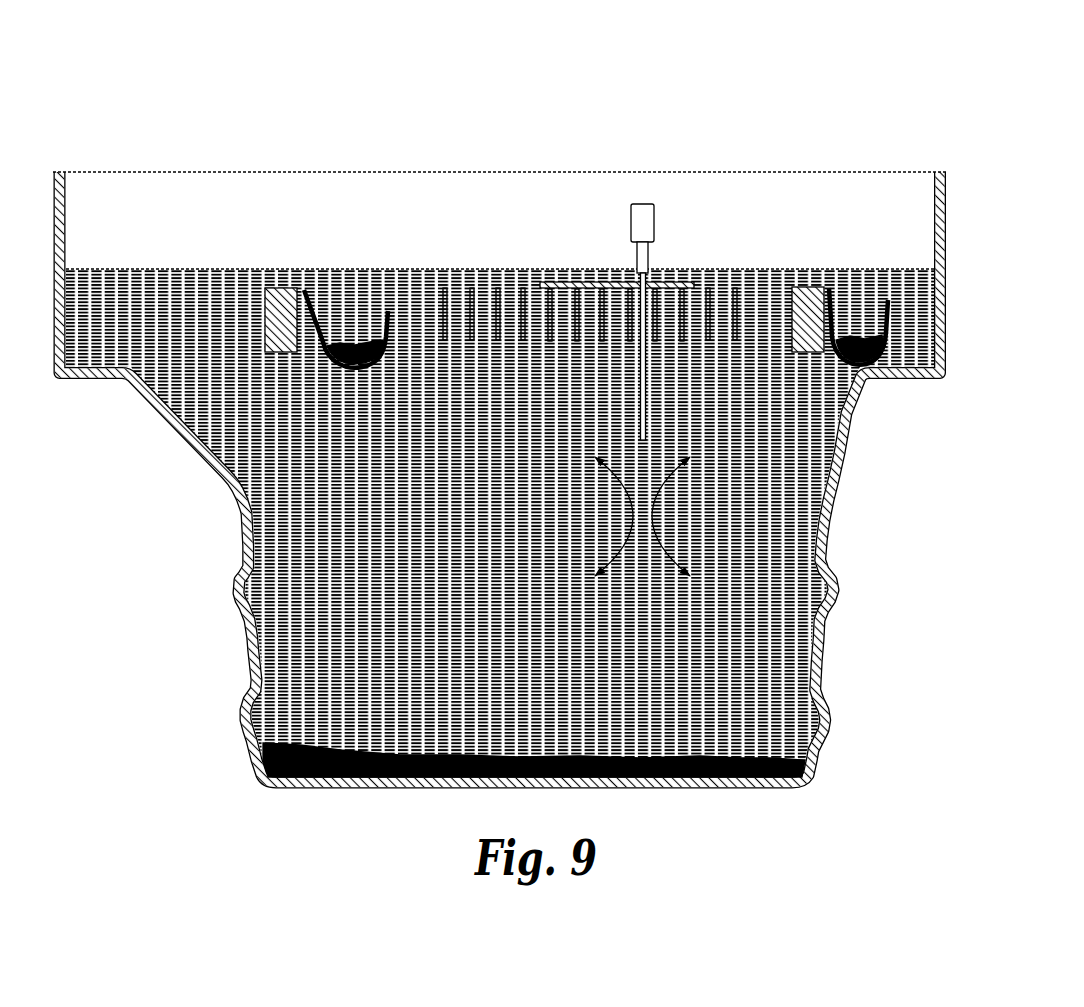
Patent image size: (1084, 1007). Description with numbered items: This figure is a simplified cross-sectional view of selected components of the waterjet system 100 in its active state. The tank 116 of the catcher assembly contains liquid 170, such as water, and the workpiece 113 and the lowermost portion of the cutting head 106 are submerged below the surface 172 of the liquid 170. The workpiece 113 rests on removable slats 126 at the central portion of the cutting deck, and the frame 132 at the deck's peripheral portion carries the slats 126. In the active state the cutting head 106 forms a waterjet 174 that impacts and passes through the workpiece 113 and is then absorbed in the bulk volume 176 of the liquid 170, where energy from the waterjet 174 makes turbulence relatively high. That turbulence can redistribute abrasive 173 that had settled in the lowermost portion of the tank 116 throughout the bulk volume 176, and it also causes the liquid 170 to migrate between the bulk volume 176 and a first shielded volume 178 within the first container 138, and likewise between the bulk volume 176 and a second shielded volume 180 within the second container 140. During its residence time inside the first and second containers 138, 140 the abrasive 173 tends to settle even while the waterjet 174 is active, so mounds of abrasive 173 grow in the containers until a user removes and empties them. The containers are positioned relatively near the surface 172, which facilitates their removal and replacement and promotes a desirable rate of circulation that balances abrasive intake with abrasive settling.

The waterjet system 100 is at (499, 399).
The surface of the liquid 172 is at (134, 266).
The frame 132 is at (282, 294).
The second container 140 is at (359, 285).
The second shielded volume 180 is at (313, 308).
The abrasive 173 is at (360, 343).
The slats 126 is at (496, 310).
The workpiece 113 is at (590, 283).
The cutting head 106 is at (652, 226).
The waterjet 174 is at (647, 388).
The first shielded volume 178 is at (840, 286).
The first container 138 is at (887, 317).
The tank 116 is at (180, 437).
The liquid 170 is at (570, 497).
The bulk volume 176 is at (583, 516).